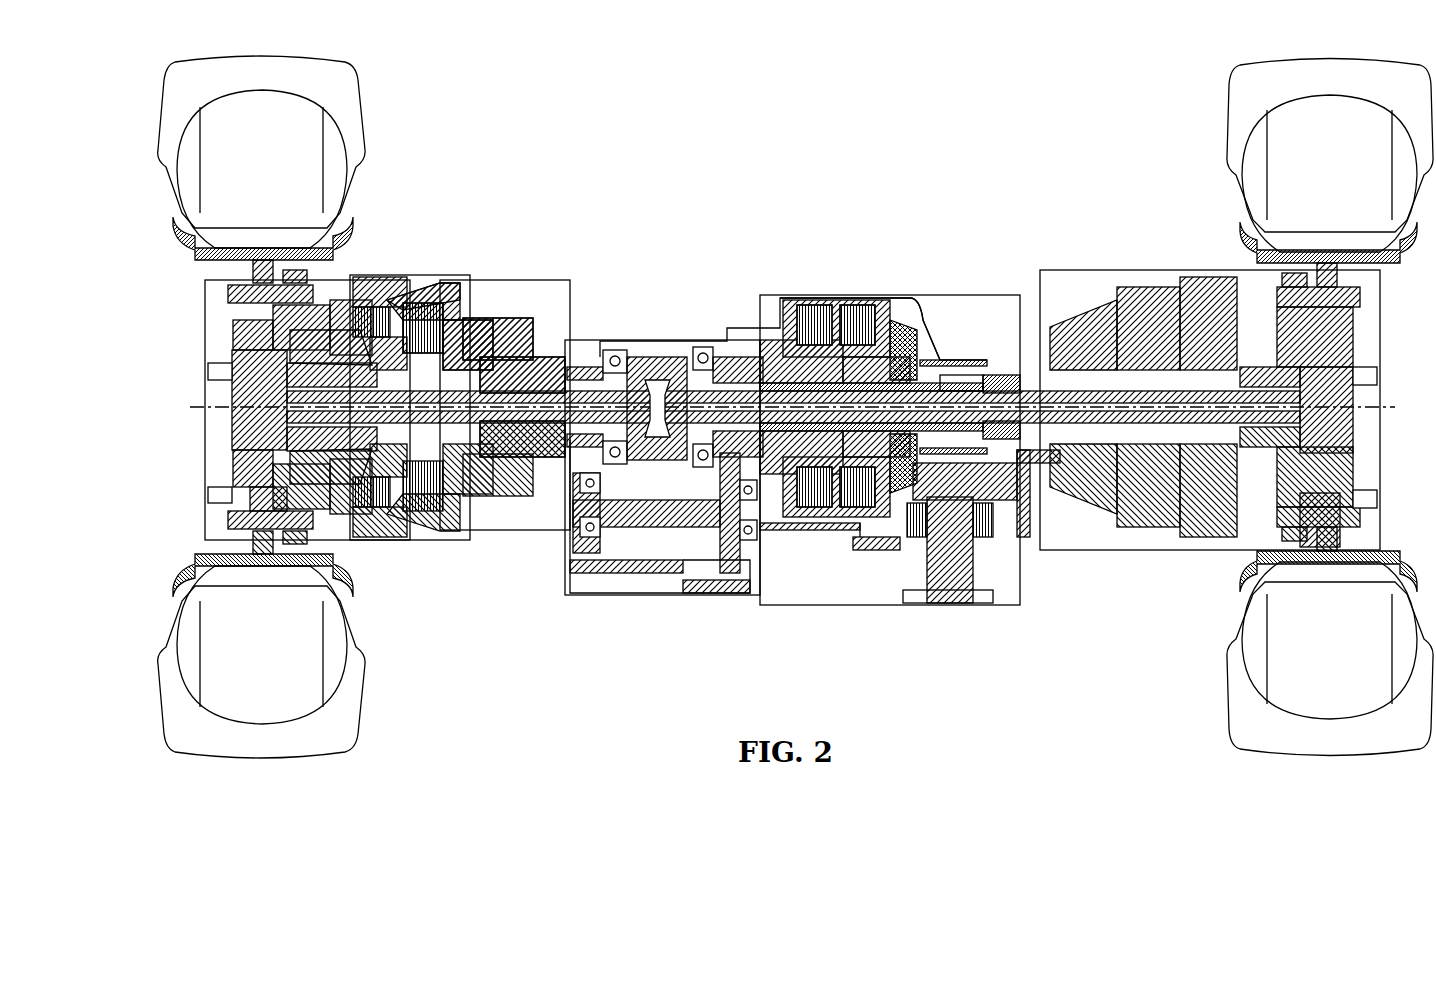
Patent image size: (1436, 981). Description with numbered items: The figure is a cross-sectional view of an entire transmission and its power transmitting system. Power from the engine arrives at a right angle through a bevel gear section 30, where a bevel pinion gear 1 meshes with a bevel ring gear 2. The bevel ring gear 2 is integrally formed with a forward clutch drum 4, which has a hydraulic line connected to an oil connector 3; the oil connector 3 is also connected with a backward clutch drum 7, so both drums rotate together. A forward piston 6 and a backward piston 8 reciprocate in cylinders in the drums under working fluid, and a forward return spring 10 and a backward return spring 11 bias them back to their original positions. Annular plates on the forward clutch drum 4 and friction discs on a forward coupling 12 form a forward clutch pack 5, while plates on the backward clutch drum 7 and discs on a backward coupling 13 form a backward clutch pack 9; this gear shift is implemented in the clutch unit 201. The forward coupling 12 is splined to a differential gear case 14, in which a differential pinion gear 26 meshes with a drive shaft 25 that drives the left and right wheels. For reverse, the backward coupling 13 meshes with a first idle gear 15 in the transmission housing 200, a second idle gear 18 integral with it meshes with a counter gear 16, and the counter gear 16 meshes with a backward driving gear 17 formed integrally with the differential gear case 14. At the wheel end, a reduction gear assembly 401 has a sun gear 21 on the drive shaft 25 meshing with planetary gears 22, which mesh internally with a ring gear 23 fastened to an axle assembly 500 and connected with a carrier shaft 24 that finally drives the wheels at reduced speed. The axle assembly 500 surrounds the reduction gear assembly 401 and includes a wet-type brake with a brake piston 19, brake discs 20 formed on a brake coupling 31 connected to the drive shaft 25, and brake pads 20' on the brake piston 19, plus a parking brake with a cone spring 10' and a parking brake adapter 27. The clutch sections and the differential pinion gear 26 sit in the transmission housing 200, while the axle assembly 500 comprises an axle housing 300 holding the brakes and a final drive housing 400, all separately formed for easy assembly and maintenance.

The bevel pinion gear 1 is at (985, 565).
The bevel ring gear 2 is at (910, 357).
The oil connector 3 is at (953, 383).
The forward clutch drum 4 is at (887, 322).
The forward clutch pack 5 is at (852, 305).
The forward piston 6 is at (913, 320).
The backward clutch drum 7 is at (808, 305).
The backward piston 8 is at (825, 300).
The backward clutch pack 9 is at (790, 335).
The forward return spring 10 is at (933, 396).
The cone spring 10' is at (440, 288).
The backward return spring 11 is at (770, 340).
The forward coupling 12 is at (740, 352).
The backward coupling 13 is at (715, 350).
The differential gear case 14 is at (668, 355).
The first idle gear 15 is at (725, 470).
The counter gear 16 is at (615, 460).
The backward driving gear 17 is at (580, 480).
The second idle gear 18 is at (575, 515).
The brake piston 19 is at (528, 350).
The brake discs 20 is at (487, 332).
The brake pads 20' is at (517, 333).
The sun gear 21 is at (388, 425).
The planetary gears 22 is at (395, 510).
The ring gear 23 is at (390, 530).
The carrier shaft 24 is at (240, 432).
The drive shaft 25 is at (552, 395).
The differential pinion gear 26 is at (618, 350).
The parking brake adapter 27 is at (445, 328).
The bevel gear section 30 is at (892, 578).
The brake coupling 31 is at (530, 500).
The transmission housing 200 is at (719, 269).
The clutch unit 201 is at (917, 262).
The axle housing 300 is at (586, 299).
The final drive housing 400 is at (222, 335).
The reduction gear assembly 401 is at (407, 257).
The axle assembly 500 is at (524, 276).